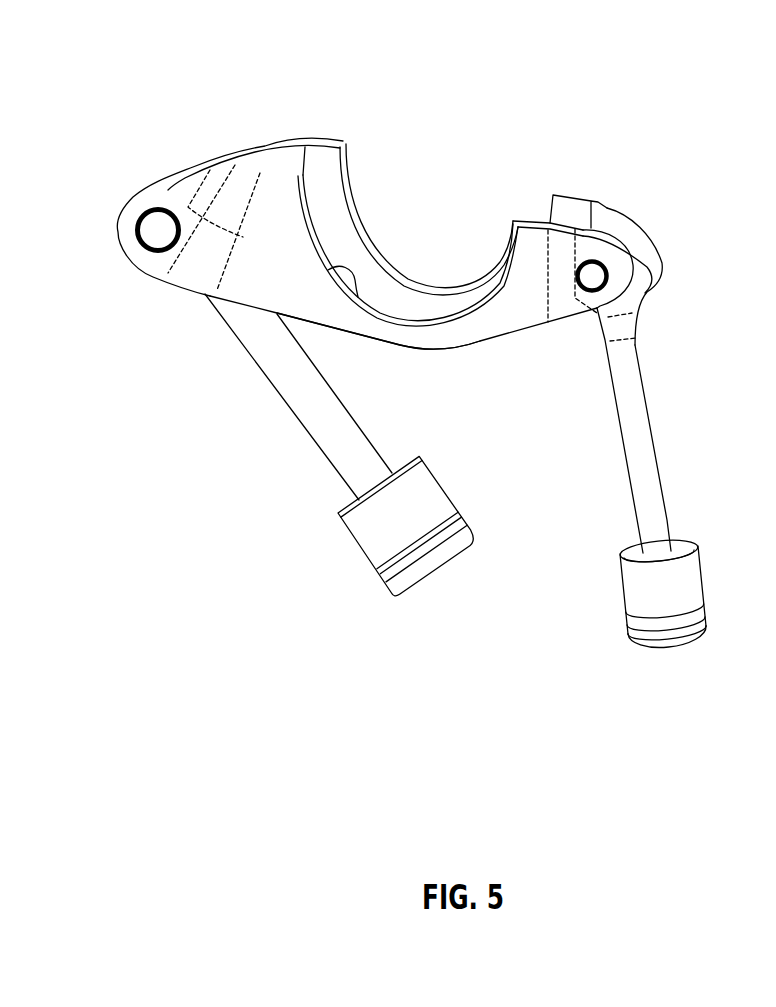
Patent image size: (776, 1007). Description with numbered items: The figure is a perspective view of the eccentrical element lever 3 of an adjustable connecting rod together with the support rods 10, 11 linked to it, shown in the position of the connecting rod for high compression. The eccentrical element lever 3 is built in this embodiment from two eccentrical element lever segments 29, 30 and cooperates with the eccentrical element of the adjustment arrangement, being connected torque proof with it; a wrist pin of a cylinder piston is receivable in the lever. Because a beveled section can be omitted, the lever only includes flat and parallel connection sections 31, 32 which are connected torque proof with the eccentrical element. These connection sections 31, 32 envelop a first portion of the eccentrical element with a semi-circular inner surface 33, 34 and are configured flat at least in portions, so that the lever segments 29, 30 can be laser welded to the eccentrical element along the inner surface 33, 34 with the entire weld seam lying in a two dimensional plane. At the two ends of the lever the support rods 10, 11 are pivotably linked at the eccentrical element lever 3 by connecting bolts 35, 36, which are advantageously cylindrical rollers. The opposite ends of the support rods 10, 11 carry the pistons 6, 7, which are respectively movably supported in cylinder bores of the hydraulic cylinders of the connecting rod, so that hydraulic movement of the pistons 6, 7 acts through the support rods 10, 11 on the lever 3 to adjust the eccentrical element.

The eccentrical element lever 3 is at (609, 178).
The piston 6 is at (372, 528).
The piston 7 is at (682, 582).
The support rod 10 is at (273, 366).
The support rod 11 is at (640, 412).
The eccentrical element lever segment 29 is at (250, 148).
The eccentrical element lever segment 30 is at (317, 142).
The connection section 31 is at (406, 338).
The connection section 32 is at (433, 307).
The semi-circular inner surface 33 is at (328, 270).
The semi-circular inner surface 34 is at (393, 270).
The connecting bolt 35 is at (157, 231).
The connecting bolt 36 is at (590, 280).